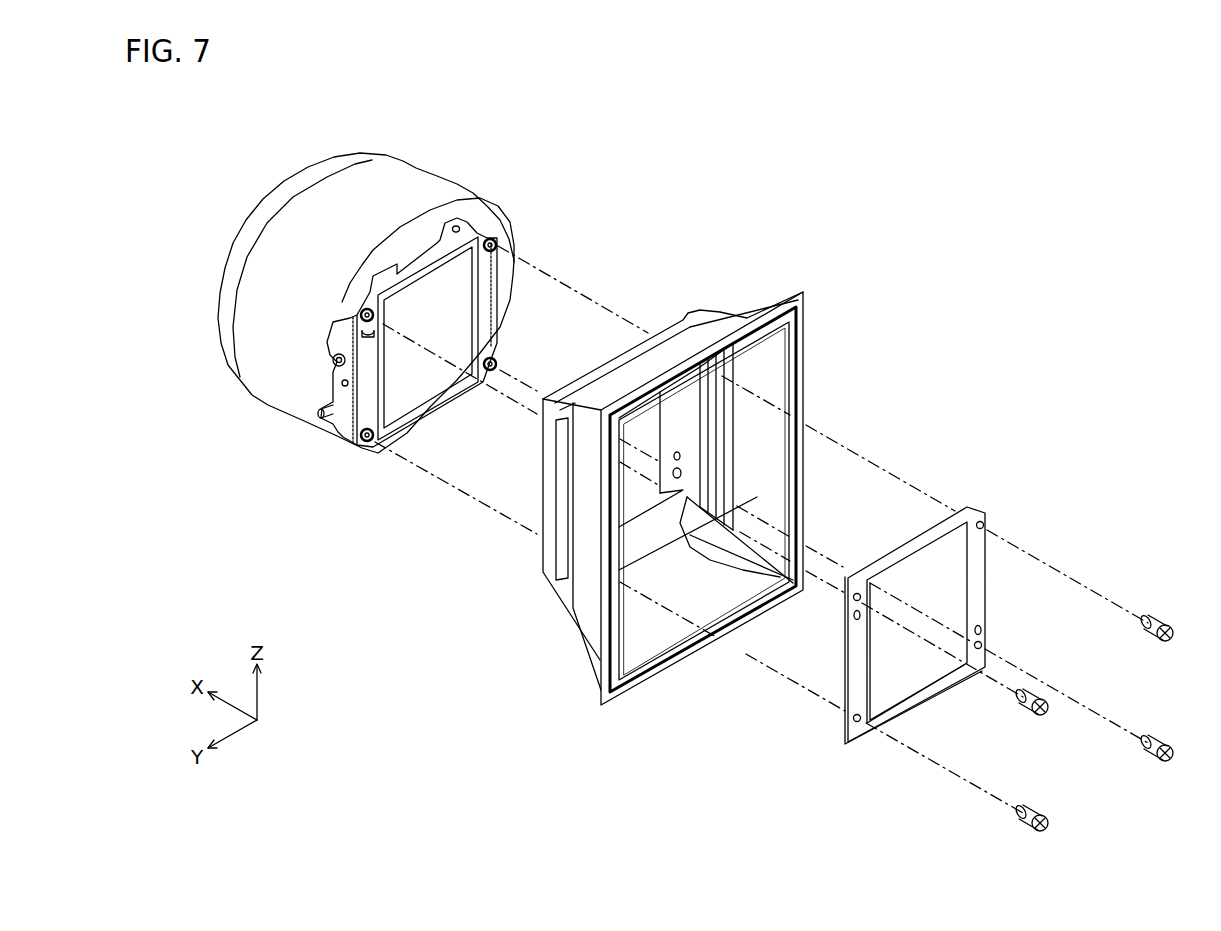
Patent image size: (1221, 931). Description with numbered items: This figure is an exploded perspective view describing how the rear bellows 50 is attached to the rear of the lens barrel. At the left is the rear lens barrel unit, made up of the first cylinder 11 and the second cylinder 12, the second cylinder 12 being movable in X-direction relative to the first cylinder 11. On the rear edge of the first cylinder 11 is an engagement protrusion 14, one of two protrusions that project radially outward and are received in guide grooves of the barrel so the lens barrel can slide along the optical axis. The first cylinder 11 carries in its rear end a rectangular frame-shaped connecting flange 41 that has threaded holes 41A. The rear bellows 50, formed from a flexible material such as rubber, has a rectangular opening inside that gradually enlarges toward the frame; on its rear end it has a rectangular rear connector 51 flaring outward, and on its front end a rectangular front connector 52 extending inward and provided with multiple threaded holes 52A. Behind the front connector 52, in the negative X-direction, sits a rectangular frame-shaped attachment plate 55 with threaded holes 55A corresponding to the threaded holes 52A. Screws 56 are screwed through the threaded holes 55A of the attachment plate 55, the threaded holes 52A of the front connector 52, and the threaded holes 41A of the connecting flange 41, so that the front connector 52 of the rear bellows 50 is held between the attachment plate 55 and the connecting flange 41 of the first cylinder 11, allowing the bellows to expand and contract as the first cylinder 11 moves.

The first cylinder 11 is at (374, 303).
The second cylinder 12 is at (238, 268).
The engagement protrusion 14 is at (280, 449).
The connecting flange 41 is at (385, 372).
The threaded holes 41A is at (385, 372).
The rear bellows 50 is at (705, 485).
The rear connector 51 is at (702, 522).
The front connector 52 is at (736, 463).
The threaded holes 52A is at (770, 486).
The attachment plate 55 is at (917, 633).
The threaded holes 55A is at (917, 636).
The screws 56 is at (1107, 722).